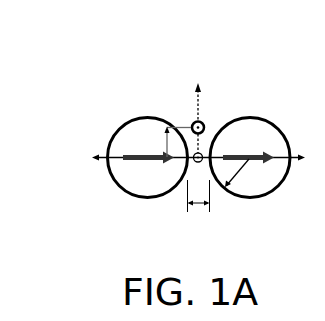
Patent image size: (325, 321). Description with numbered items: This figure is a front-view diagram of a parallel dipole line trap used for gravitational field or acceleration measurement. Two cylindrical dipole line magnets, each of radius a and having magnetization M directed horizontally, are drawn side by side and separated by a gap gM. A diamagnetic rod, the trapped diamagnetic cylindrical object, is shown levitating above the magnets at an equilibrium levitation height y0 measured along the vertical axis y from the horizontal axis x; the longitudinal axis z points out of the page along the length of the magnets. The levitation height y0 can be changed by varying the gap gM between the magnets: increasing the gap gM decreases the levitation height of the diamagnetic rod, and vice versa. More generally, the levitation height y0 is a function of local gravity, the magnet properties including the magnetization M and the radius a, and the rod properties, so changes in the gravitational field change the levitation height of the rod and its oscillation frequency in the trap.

The magnetization M is at (102, 80).
The diamagnetic rod is at (193, 121).
The radius a is at (237, 173).
The gap gM is at (200, 206).
The levitation height y0 is at (170, 142).
The x axis x is at (198, 165).
The vertical axis y is at (203, 111).
The z axis z is at (197, 166).